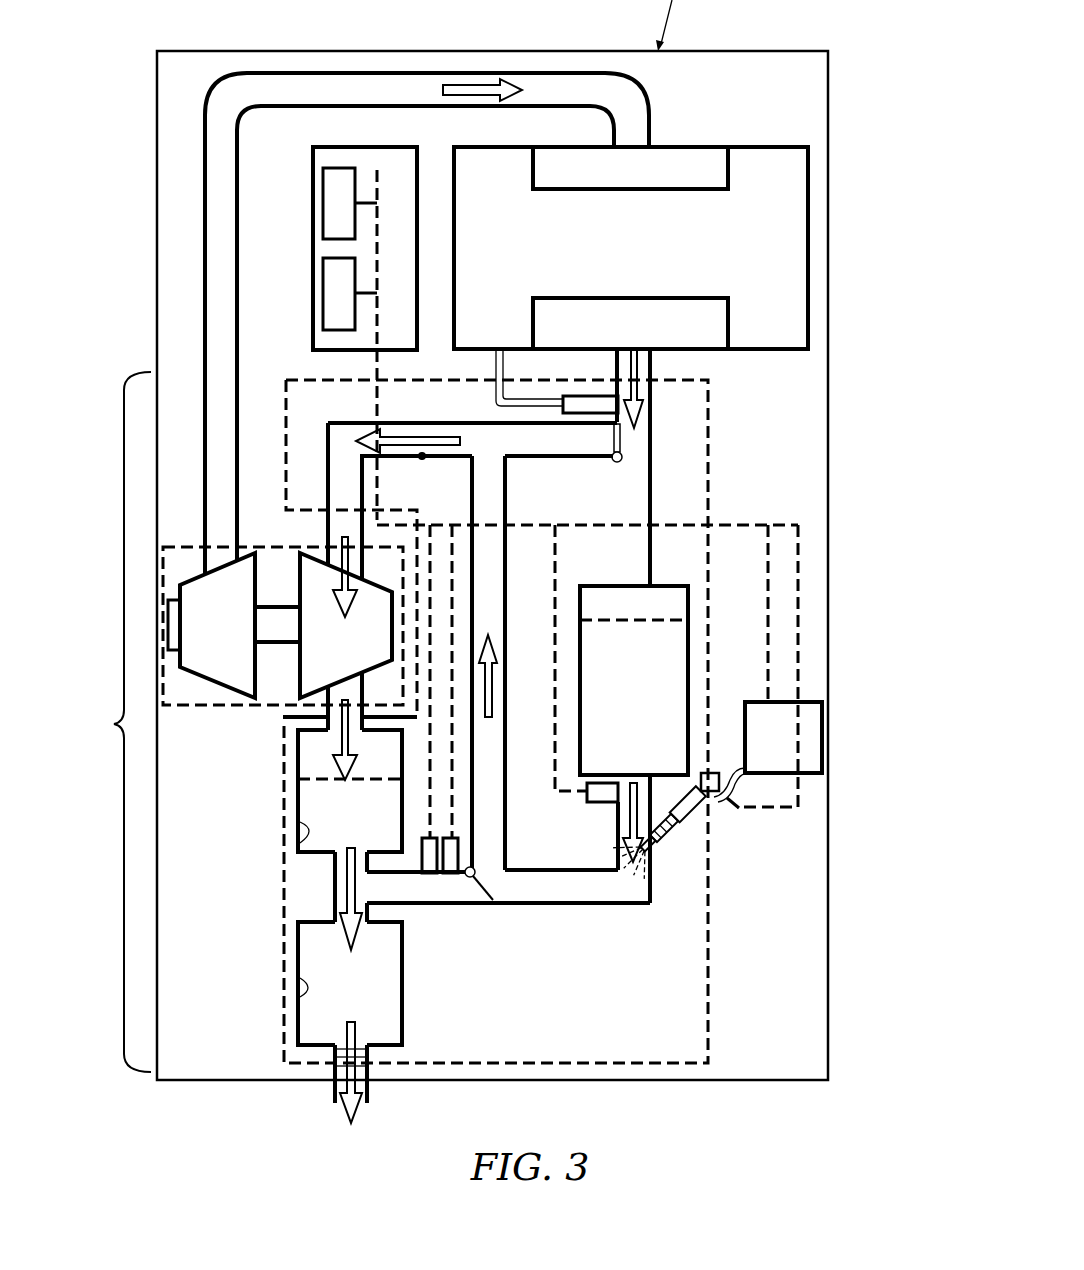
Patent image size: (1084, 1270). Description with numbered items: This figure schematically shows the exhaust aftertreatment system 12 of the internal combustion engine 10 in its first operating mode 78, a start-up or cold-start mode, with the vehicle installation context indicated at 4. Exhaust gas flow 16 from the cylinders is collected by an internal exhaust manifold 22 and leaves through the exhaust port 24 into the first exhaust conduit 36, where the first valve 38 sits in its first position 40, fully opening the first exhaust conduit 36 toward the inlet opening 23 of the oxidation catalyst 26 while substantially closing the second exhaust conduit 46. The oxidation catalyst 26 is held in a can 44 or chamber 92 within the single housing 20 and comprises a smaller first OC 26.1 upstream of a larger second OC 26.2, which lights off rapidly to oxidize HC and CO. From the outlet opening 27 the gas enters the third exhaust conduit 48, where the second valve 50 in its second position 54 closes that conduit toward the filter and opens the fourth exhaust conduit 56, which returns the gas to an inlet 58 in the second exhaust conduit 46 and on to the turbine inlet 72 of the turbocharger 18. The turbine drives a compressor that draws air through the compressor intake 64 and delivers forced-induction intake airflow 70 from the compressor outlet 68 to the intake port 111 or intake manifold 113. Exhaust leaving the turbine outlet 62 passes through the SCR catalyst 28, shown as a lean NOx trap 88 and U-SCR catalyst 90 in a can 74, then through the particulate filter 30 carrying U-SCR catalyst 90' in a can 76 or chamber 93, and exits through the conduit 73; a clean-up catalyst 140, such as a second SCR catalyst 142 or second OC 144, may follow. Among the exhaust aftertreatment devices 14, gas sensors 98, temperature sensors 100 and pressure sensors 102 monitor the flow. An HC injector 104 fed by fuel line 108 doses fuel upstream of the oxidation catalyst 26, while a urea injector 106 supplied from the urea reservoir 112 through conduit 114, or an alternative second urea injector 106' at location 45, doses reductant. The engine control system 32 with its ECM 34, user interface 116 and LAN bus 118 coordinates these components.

The catalyst substrate 4 is at (327, 782).
The internal combustion engine 10 is at (814, 222).
The exhaust aftertreatment system 12 is at (716, 430).
The exhaust aftertreatment devices 14 is at (627, 692).
The exhaust gas flow 16 is at (636, 360).
The turbocharger 18 is at (192, 545).
The housing 20 is at (712, 985).
The exhaust manifold 22 is at (630, 298).
The inlet opening 23 is at (630, 620).
The exhaust port 24 is at (645, 349).
The oxidation catalyst (OC) 26 is at (697, 668).
The first OC 26.1 is at (603, 605).
The second OC 26.2 is at (662, 623).
The outlet opening 27 is at (632, 782).
The SCR catalyst 28 is at (322, 781).
The particulate filter (PF) 30 is at (291, 958).
The engine control system 32 is at (313, 244).
The electronic engine control module (ECM) 34 is at (313, 289).
The first exhaust conduit 36 is at (638, 500).
The first valve 38 is at (622, 462).
The first position 40 is at (621, 440).
The can 44 is at (690, 633).
The location 45 is at (422, 460).
The second exhaust conduit 46 is at (562, 455).
The third exhaust conduit 48 is at (558, 890).
The second valve 50 is at (483, 860).
The second position 54 is at (487, 887).
The fourth exhaust conduit 56 is at (505, 605).
The inlet 58 is at (487, 463).
The turbine outlet 62 is at (330, 672).
The compressor intake 64 is at (168, 628).
The compressor outlet 68 is at (220, 557).
The forced-induction intake airflow 70 is at (468, 82).
The turbine inlet 72 is at (332, 573).
The conduit 73 is at (362, 1085).
The can 74 is at (400, 815).
The can 76 is at (402, 1017).
The first operating mode 78 is at (114, 722).
The lean NOx trap (LNT) 88 is at (290, 770).
The U-SCR catalyst 90 is at (264, 863).
The U-SCR catalyst 90' is at (262, 1040).
The chamber 92 is at (307, 827).
The chamber 93 is at (305, 980).
The gas sensors 98 is at (452, 876).
The temperature sensors 100 is at (605, 783).
The pressure sensors 102 is at (430, 875).
The HC injector 104 is at (600, 396).
The urea injector 106 is at (685, 820).
The second urea injector 106' is at (422, 458).
The fuel line 108 is at (528, 403).
The intake port 111 is at (665, 150).
The urea reservoir 112 is at (822, 705).
The intake manifold 113 is at (593, 190).
The conduit 114 is at (719, 765).
The user interface (UI) 116 is at (313, 203).
The LAN bus 118 is at (383, 219).
The clean-up catalyst 140 is at (332, 1049).
The second SCR catalyst 142 is at (337, 1057).
The second OC 144 is at (337, 1067).